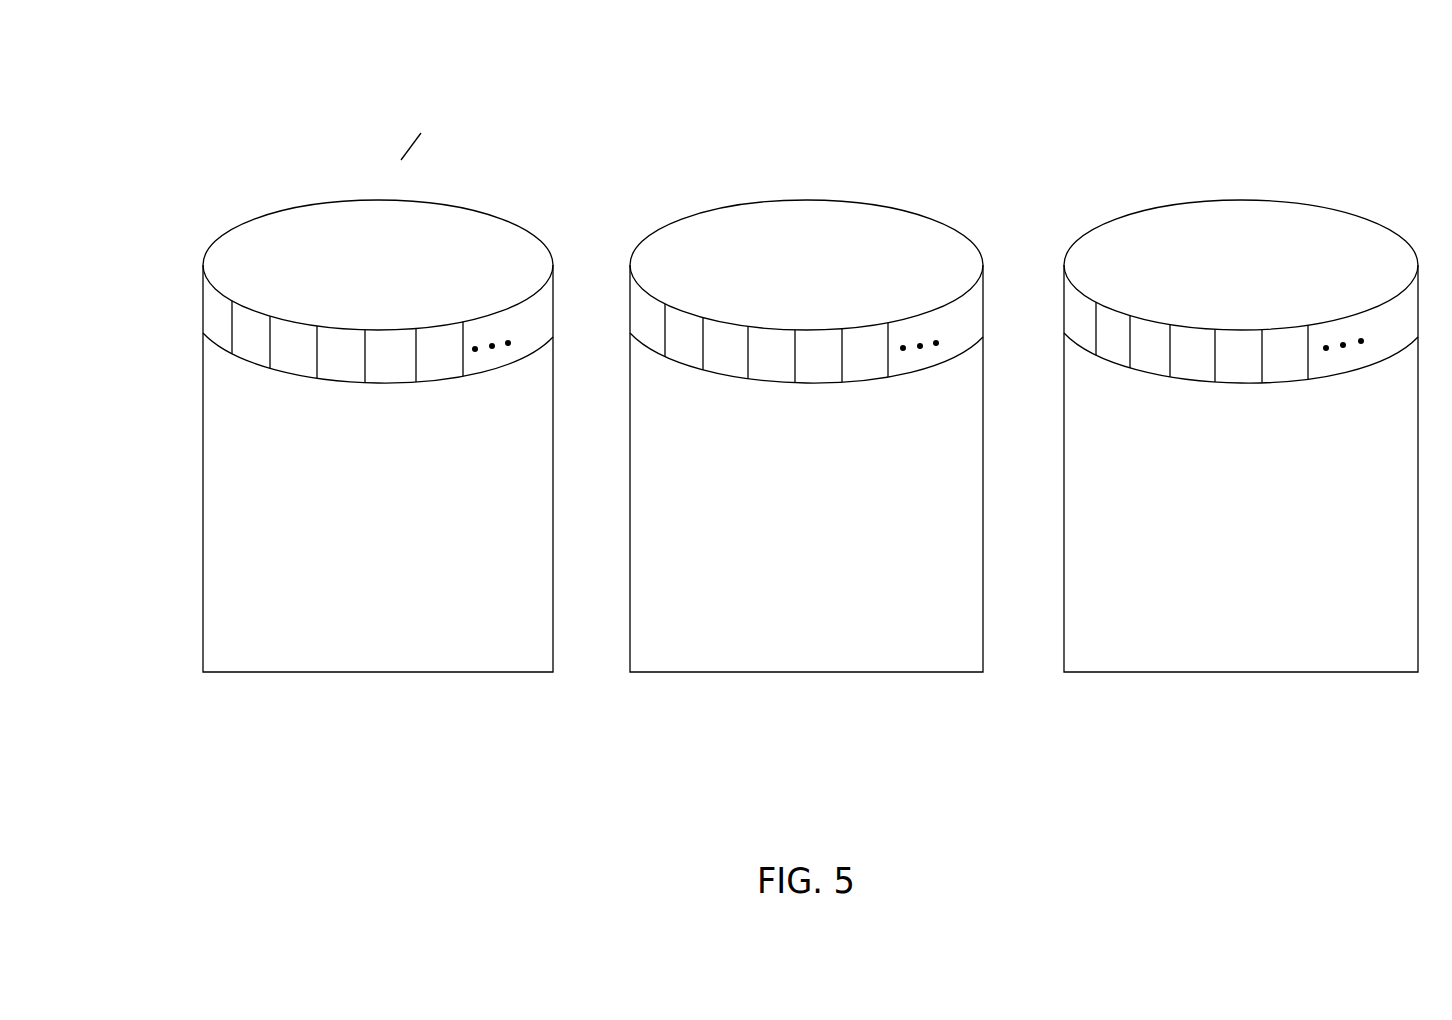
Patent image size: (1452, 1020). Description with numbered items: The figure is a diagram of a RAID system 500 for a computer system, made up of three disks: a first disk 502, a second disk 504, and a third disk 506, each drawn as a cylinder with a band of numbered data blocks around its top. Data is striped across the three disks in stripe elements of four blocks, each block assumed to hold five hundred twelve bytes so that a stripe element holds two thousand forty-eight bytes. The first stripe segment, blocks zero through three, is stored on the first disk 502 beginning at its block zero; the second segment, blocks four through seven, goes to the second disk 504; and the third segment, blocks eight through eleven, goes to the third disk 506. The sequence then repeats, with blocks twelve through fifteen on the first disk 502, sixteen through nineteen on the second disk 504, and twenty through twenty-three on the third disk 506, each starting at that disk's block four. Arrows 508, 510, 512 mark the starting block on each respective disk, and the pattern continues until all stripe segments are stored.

The RAID system 500 is at (1011, 85).
The disk-0 502 is at (372, 637).
The disk-1 504 is at (803, 637).
The disk-2 506 is at (1237, 632).
The starting block pointer for disk 0 508 is at (203, 302).
The starting block pointer for disk 1 510 is at (630, 297).
The starting block pointer for disk 2 512 is at (1064, 298).